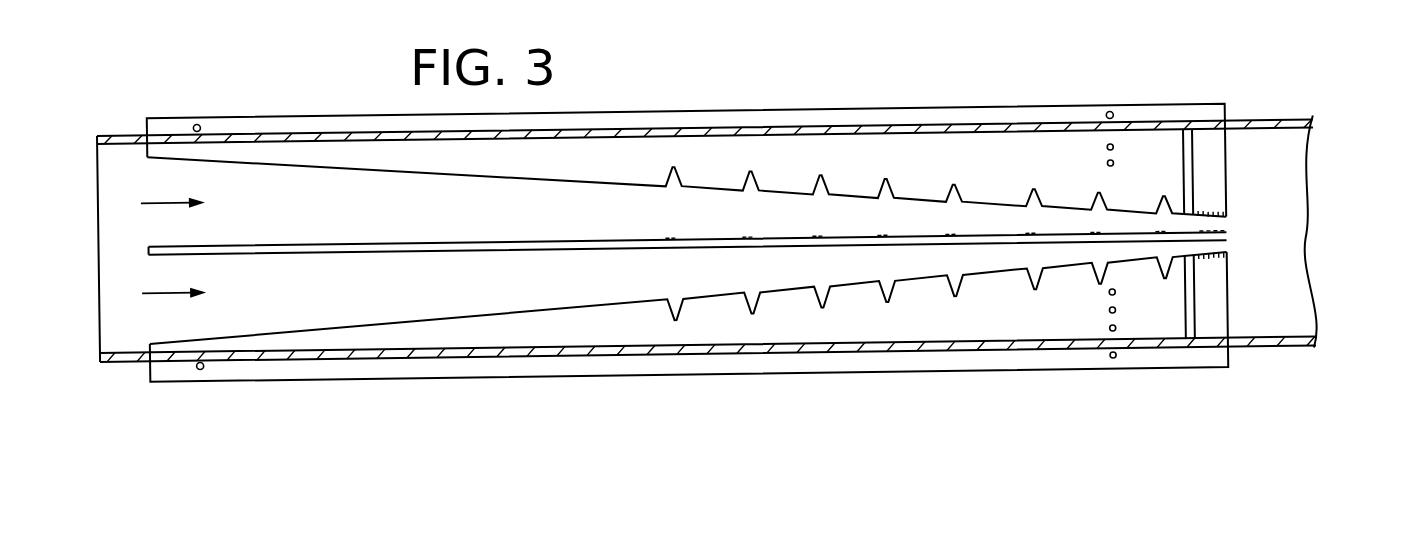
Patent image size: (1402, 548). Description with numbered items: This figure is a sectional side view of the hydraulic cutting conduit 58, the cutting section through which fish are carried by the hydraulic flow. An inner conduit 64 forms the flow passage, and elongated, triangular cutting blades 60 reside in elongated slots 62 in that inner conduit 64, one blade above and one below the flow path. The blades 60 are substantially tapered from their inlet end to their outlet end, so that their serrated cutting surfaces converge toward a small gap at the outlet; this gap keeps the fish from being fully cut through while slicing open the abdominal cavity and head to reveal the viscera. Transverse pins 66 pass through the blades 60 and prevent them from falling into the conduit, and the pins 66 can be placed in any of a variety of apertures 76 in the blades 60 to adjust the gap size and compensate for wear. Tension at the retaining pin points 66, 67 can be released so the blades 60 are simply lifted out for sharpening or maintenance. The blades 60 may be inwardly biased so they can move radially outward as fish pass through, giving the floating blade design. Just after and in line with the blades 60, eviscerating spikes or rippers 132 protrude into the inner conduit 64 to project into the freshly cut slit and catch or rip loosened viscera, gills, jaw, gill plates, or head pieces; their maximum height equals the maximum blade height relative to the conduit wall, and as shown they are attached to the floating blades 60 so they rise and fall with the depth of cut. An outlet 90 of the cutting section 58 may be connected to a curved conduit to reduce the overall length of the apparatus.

The hydraulic cutting conduit 58 is at (708, 108).
The cutting blades 60 is at (985, 182).
The elongated slots 62 is at (438, 257).
The inner conduit 64 is at (1272, 136).
The transverse pins 66 is at (1113, 127).
The retaining pin points 67 is at (201, 126).
The apertures 76 is at (1114, 177).
The outlet 90 is at (1320, 139).
The eviscerating spikes 132 is at (1212, 197).